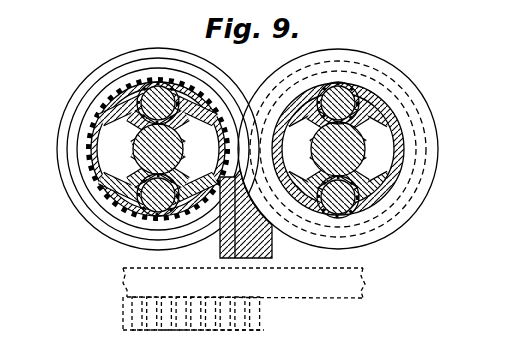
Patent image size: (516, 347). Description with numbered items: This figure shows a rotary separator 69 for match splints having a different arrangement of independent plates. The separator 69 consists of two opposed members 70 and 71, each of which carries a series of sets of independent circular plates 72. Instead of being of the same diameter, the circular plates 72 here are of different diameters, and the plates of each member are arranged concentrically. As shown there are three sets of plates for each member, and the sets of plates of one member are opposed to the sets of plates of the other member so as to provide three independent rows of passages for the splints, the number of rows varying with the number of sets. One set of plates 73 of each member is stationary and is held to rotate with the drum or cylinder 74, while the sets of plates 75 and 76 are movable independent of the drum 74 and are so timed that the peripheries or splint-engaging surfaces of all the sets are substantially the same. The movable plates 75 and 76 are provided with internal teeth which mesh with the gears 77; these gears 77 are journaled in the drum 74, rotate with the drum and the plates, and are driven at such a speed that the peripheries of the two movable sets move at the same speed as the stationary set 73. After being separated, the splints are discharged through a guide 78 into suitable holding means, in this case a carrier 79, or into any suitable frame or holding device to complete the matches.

The separator 69 is at (358, 149).
The opposed member 70 is at (348, 149).
The opposed member 71 is at (119, 149).
The circular plates 72 is at (77, 174).
The stationary set of plates 73 is at (108, 230).
The drum 74 is at (99, 159).
The movable set of plates 75 is at (80, 108).
The movable set of plates 76 is at (112, 90).
The gears 77 is at (156, 84).
The guide 78 is at (273, 247).
The carrier 79 is at (298, 301).